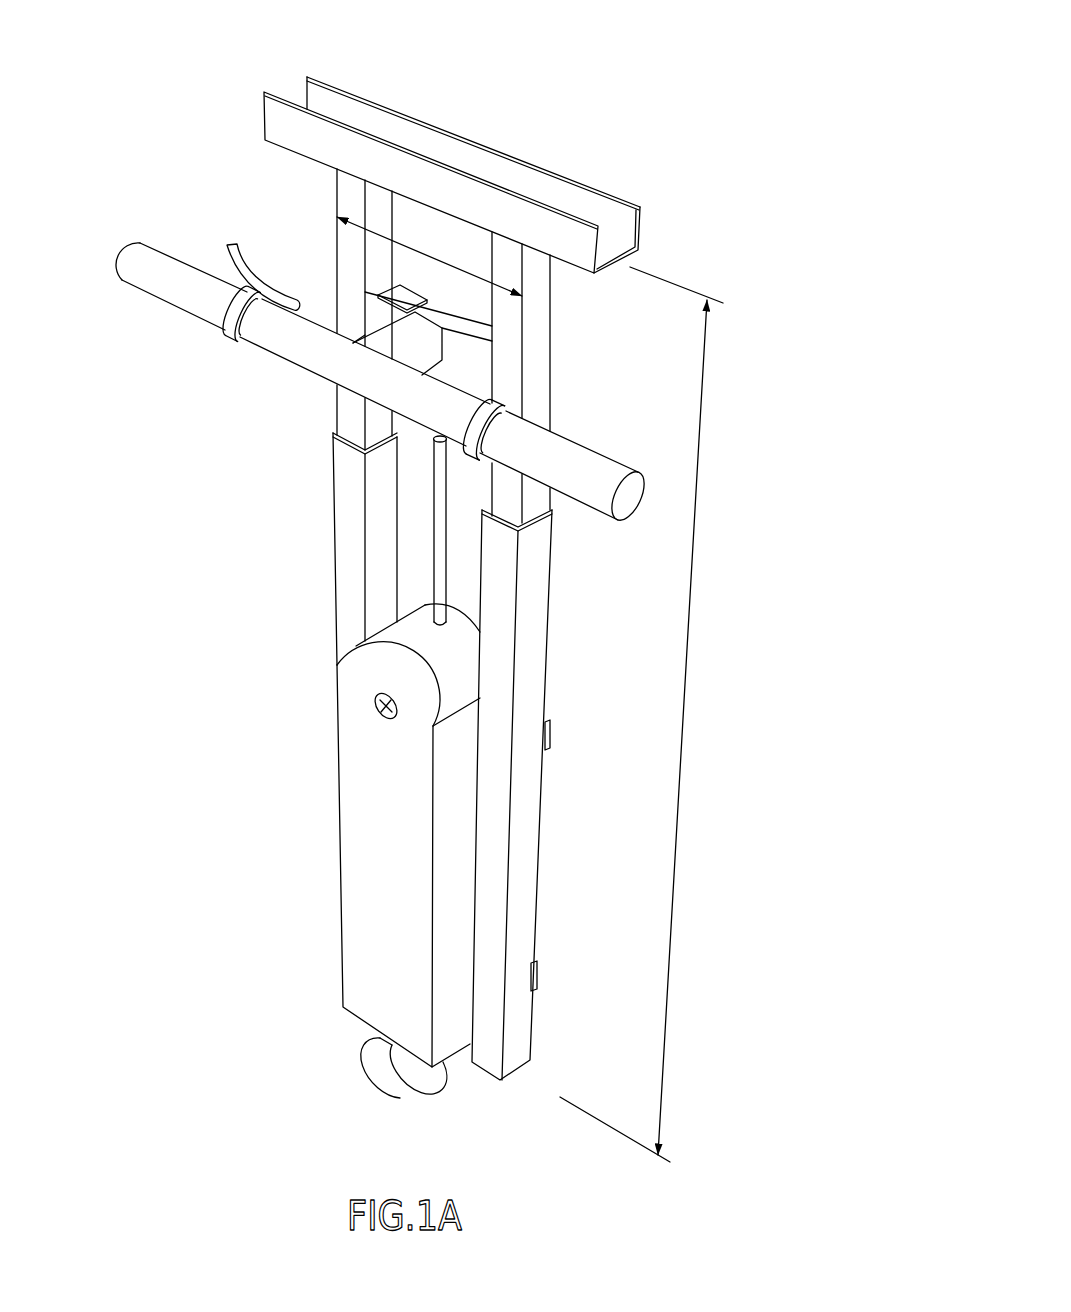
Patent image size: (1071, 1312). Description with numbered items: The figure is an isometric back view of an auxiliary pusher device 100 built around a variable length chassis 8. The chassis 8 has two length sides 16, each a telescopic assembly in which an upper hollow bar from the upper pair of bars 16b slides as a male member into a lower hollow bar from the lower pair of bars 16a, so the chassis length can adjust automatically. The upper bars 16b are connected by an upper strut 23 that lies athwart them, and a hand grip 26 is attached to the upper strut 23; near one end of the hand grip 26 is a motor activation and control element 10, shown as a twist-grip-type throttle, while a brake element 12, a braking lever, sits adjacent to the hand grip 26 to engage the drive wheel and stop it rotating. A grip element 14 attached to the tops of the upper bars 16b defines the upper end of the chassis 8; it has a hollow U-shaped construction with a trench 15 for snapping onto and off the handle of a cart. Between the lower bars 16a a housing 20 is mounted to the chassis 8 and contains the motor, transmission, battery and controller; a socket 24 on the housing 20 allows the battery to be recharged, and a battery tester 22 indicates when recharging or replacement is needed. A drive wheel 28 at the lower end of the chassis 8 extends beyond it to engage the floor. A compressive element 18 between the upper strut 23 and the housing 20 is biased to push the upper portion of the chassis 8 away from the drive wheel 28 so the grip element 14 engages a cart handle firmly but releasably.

The auxiliary pusher device 100 is at (625, 60).
The variable length chassis 8 is at (411, 624).
The motor activation and control element 10 is at (607, 470).
The brake element 12 is at (243, 262).
The grip element 14 is at (565, 177).
The trench 15 is at (620, 228).
The length sides 16 is at (420, 624).
The lower pair of hollow bars 16a is at (260, 426).
The upper pair of hollow bars 16b is at (338, 396).
The compressive element 18 is at (432, 560).
The housing 20 is at (350, 858).
The battery tester 22 is at (395, 300).
The upper strut 23 is at (482, 360).
The socket 24 is at (378, 712).
The hand grip 26 is at (290, 360).
The drive wheel 28 is at (428, 1078).